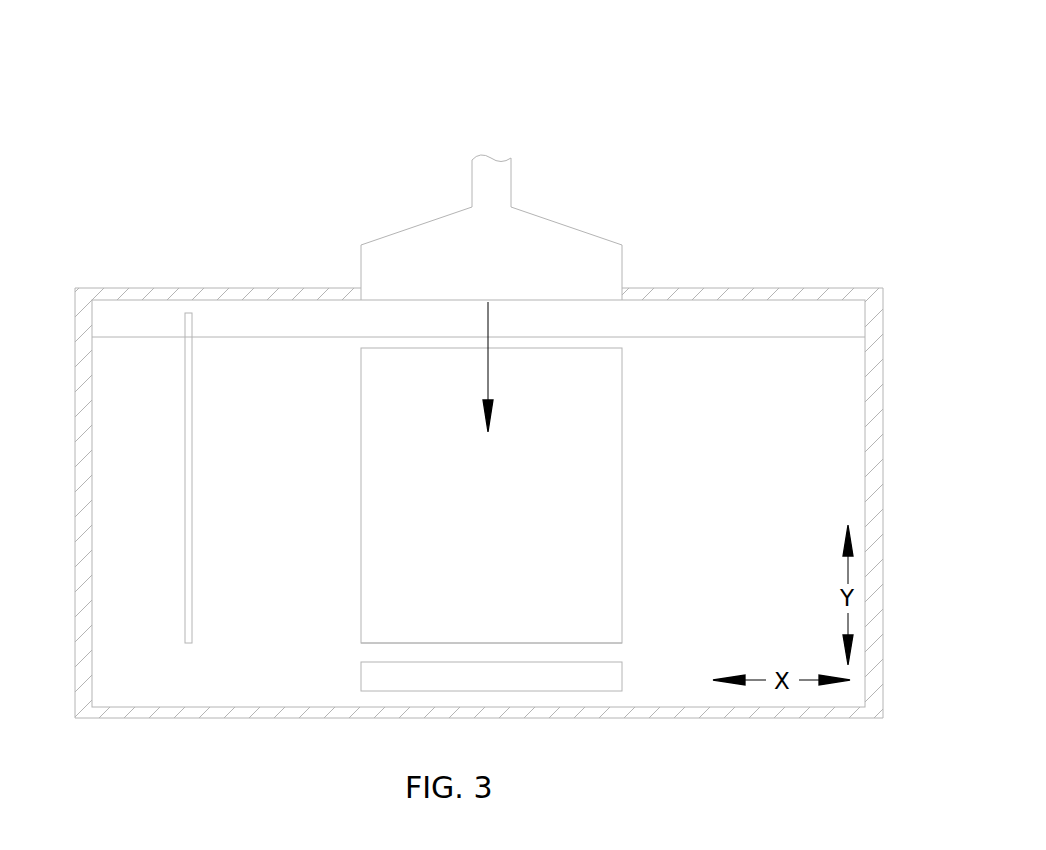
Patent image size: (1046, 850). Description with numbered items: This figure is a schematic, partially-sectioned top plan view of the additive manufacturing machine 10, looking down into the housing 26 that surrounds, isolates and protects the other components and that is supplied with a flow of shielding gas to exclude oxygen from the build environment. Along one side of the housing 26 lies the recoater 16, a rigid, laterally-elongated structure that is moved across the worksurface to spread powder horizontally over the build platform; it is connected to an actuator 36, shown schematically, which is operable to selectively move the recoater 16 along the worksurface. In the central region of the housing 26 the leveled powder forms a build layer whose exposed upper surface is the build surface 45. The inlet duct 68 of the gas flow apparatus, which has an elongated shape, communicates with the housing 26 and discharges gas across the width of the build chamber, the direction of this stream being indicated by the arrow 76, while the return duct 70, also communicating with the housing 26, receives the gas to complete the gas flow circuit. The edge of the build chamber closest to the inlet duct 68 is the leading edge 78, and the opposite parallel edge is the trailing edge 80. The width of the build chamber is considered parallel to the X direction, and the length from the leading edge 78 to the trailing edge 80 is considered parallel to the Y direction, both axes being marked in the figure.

The additive manufacturing machine 10 is at (636, 58).
The recoater 16 is at (187, 447).
The housing 26 is at (873, 347).
The actuator 36 is at (143, 330).
The build surface 45 is at (608, 634).
The inlet duct 68 is at (540, 226).
The return duct 70 is at (367, 680).
The arrow 76 is at (489, 386).
The leading edge 78 is at (600, 348).
The trailing edge 80 is at (603, 643).